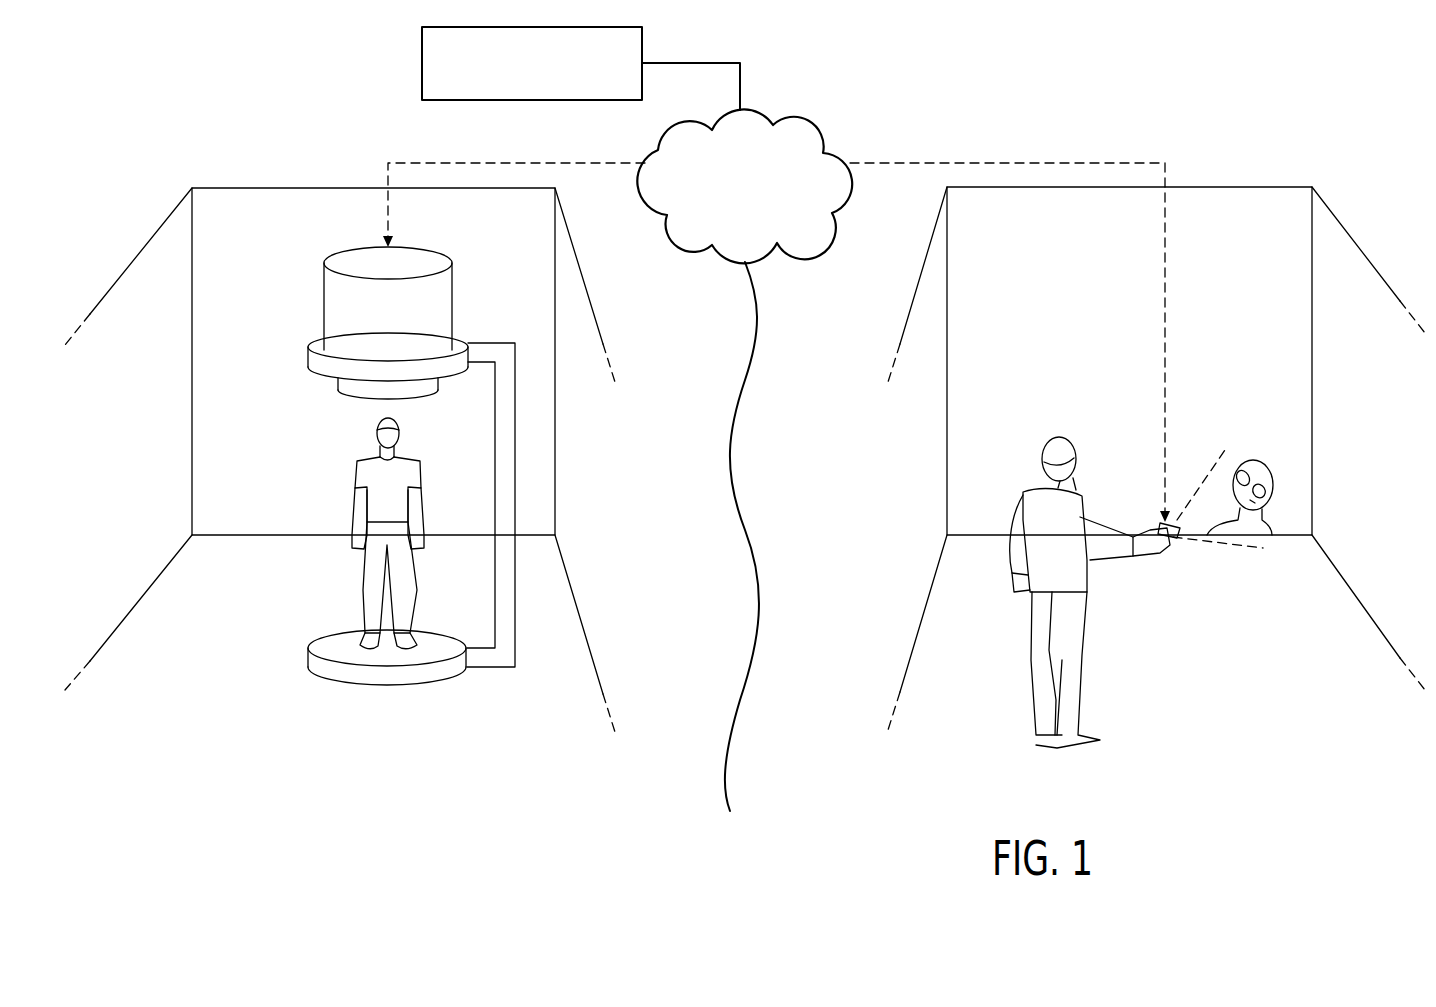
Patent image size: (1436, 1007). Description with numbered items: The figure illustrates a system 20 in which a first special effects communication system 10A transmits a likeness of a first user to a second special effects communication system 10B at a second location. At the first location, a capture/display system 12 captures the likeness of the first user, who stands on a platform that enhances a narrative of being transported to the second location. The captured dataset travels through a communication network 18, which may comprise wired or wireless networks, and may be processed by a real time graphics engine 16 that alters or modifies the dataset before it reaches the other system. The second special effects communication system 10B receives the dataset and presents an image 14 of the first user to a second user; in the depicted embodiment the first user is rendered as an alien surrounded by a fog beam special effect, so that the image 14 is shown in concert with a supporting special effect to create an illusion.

The first special effects communication system 10A is at (355, 691).
The second special effects communication system 10B is at (1165, 569).
The capture/display system 12 is at (416, 256).
The image 14 is at (1261, 433).
The real time graphics engine 16 is at (422, 67).
The communication network 18 is at (807, 118).
The system 20 is at (170, 99).